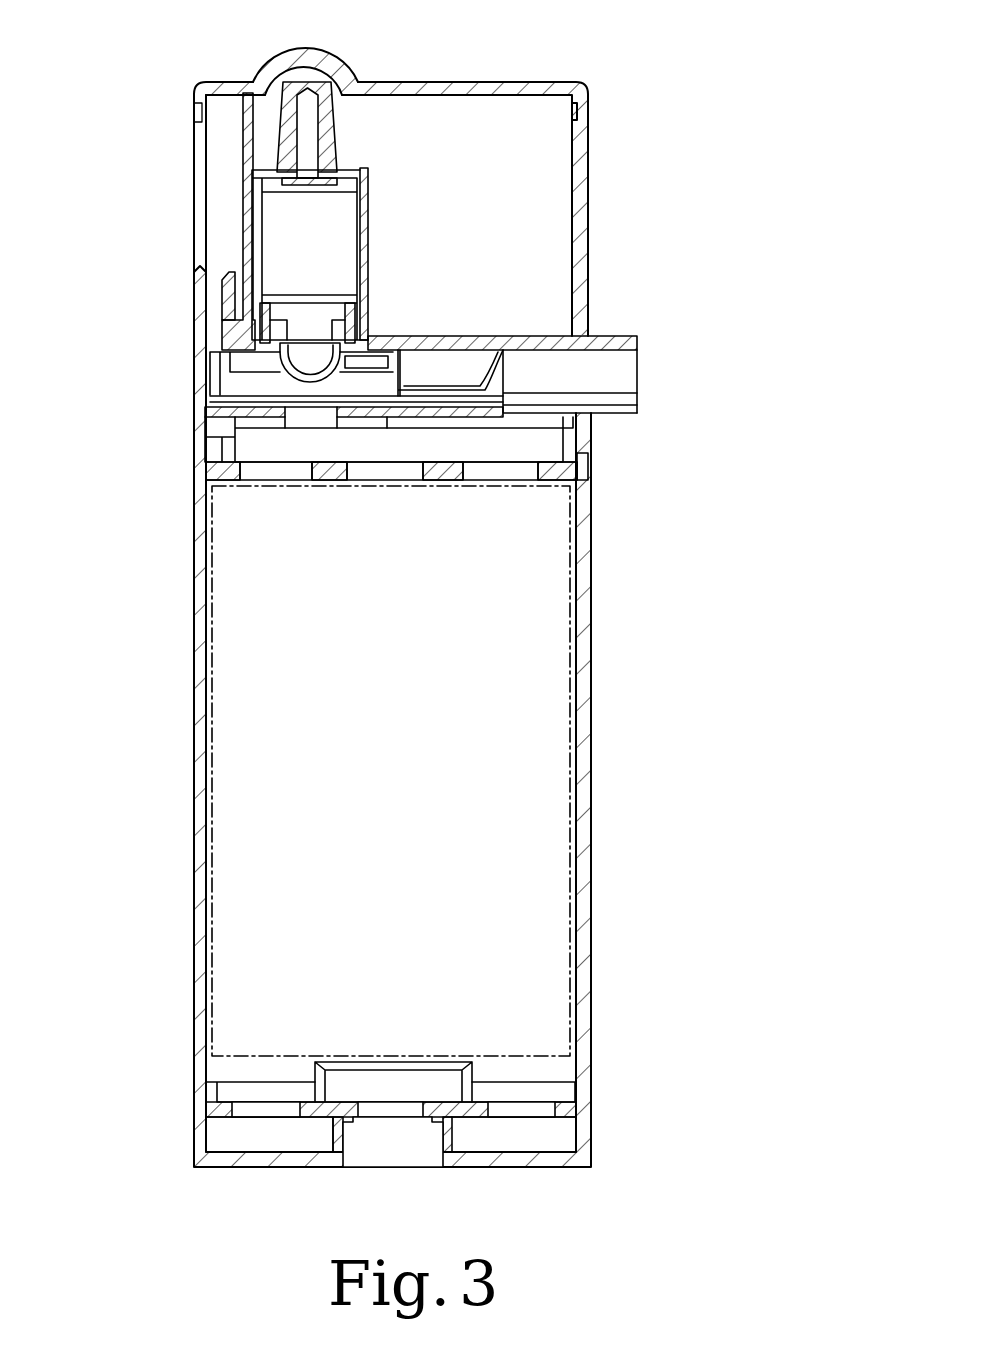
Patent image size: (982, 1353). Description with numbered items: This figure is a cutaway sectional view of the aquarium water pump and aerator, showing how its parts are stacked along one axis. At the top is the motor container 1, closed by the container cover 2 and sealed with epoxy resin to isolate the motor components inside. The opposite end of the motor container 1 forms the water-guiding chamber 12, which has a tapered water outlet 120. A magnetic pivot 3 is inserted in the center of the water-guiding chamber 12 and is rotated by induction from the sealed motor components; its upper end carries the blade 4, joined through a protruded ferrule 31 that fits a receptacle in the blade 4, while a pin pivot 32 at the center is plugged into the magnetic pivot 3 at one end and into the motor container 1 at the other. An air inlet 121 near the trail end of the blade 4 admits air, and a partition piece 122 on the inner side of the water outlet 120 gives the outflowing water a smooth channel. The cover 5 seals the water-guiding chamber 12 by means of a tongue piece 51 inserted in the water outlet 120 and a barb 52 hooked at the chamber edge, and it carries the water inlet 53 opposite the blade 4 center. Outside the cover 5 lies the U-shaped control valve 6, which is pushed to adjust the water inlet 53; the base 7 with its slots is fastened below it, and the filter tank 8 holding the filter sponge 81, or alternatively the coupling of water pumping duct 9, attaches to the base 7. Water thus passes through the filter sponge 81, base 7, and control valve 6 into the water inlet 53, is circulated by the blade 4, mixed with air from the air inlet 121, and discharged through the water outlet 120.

The motor container 1 is at (590, 150).
The container cover 2 is at (517, 85).
The magnetic pivot 3 is at (277, 208).
The blade 4 is at (233, 363).
The cover of water-guiding chamber 5 is at (480, 417).
The water flow adjustable control valve 6 is at (240, 480).
The base 7 is at (579, 467).
The filter tank 8 is at (195, 905).
The coupling of water pumping duct 9 is at (205, 1140).
The water-guiding chamber 12 is at (510, 352).
The protruded ferrule 31 is at (368, 335).
The pin pivot 32 is at (307, 110).
The tongue piece 51 is at (513, 397).
The barb 52 is at (206, 402).
The water inlet 53 is at (298, 412).
The filter sponge 81 is at (540, 790).
The tapered water outlet 120 is at (627, 387).
The air inlet 121 is at (228, 330).
The partition piece 122 is at (430, 383).